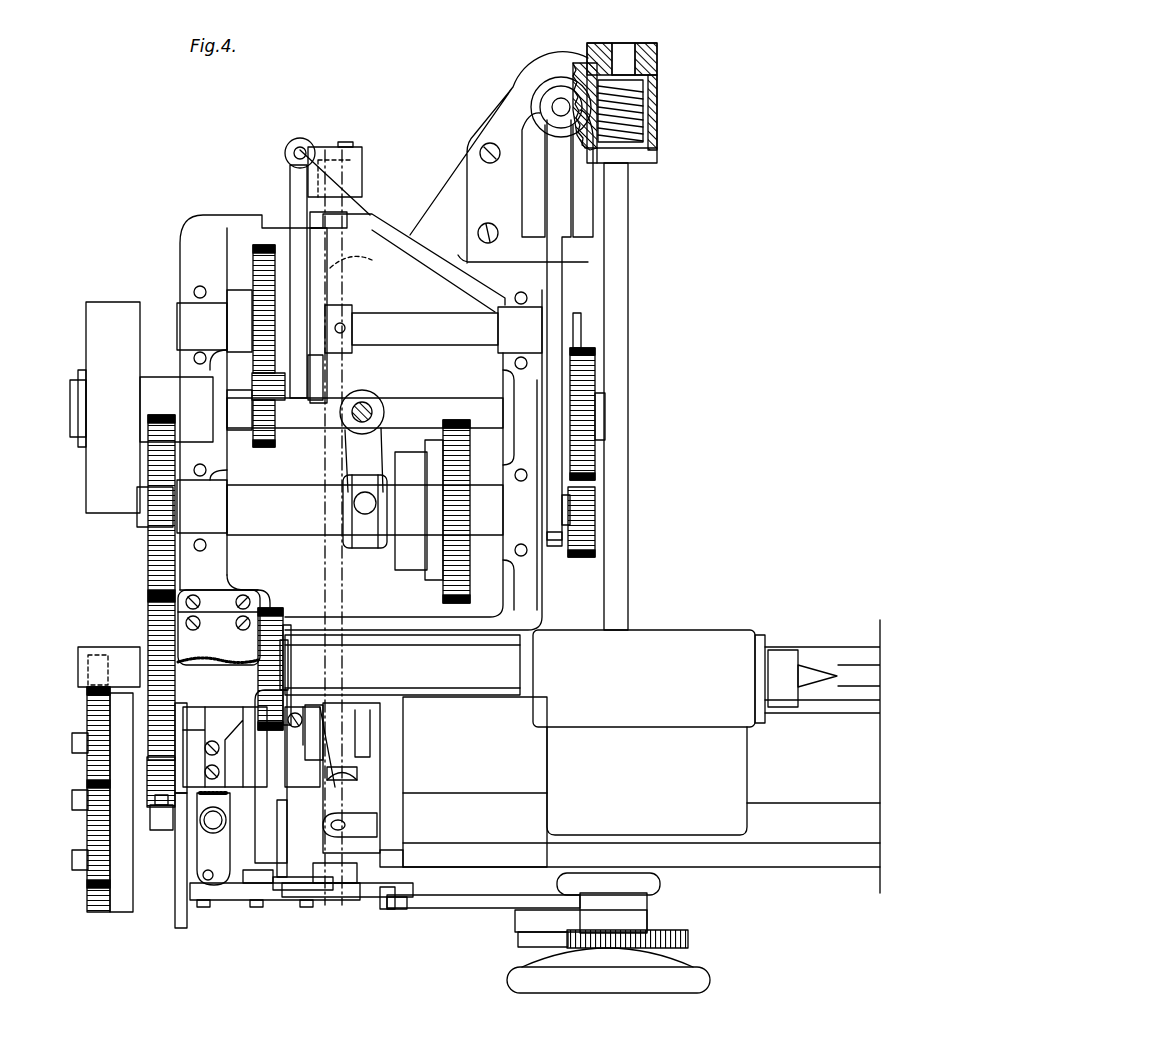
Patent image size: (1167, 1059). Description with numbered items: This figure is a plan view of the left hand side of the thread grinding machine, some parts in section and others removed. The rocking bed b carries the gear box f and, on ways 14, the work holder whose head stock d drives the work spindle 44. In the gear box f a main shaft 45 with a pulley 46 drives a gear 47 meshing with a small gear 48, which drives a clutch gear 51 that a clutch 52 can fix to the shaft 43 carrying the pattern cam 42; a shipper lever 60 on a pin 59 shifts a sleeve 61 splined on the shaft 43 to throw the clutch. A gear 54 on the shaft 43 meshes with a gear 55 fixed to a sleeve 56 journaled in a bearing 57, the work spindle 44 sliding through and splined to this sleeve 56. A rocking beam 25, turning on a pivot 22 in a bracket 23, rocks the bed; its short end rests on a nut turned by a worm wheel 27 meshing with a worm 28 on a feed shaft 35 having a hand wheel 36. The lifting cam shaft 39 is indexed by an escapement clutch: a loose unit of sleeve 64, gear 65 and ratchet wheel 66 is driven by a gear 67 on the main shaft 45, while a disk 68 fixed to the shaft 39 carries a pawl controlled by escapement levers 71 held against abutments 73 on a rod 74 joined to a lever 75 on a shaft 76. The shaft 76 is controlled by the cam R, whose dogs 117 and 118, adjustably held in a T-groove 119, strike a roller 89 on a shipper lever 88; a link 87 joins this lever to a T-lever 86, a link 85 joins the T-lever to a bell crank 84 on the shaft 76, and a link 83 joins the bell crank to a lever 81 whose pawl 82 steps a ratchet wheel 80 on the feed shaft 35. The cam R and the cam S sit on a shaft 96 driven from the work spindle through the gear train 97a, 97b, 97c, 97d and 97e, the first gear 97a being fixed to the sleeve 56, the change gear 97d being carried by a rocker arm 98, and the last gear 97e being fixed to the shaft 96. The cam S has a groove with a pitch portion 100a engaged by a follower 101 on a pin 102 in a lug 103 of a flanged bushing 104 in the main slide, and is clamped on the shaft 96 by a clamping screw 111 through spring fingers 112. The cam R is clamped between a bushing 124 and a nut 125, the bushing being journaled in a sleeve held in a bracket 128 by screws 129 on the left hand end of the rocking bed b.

The gear box f is at (170, 261).
The ways 14 is at (475, 782).
The pivot 22 is at (512, 185).
The bracket 23 is at (582, 215).
The rocking beam 25 is at (565, 297).
The worm wheel 27 is at (570, 62).
The worm 28 is at (658, 110).
The shaft 35 is at (628, 372).
The hand wheel 36 is at (540, 975).
The shaft 39 is at (398, 318).
The pattern cam 42 is at (554, 548).
The shaft 43 is at (294, 522).
The work spindle 44 is at (486, 688).
The main shaft 45 is at (415, 405).
The pulley 46 is at (92, 468).
The gear 47 is at (590, 420).
The small gear 48 is at (595, 549).
The clutch gear 51 is at (470, 588).
The clutch 52 is at (410, 562).
The gear 54 is at (148, 557).
The gear 55 is at (148, 603).
The sleeve 56 is at (223, 714).
The bearing 57 is at (219, 627).
The pin 59 is at (366, 398).
The shipper lever 60 is at (350, 447).
The sleeve 61 is at (370, 552).
The sleeve 64 is at (240, 345).
The gear 65 is at (262, 245).
The ratchet wheel 66 is at (303, 372).
The gear 67 is at (262, 450).
The disk 68 is at (318, 272).
The escapement levers 71 is at (293, 178).
The abutments 73 is at (285, 153).
The rod 74 is at (300, 138).
The lever 75 is at (330, 145).
The shaft 76 is at (372, 260).
The ratchet wheel 80 is at (688, 940).
The lever 81 is at (525, 918).
The pawl 82 is at (530, 935).
The link 83 is at (440, 900).
The bell crank 84 is at (357, 865).
The link 85 is at (245, 883).
The T-lever 86 is at (292, 880).
The link 87 is at (252, 872).
The shipper lever 88 is at (205, 862).
The roller 89 is at (200, 865).
The shaft 96 is at (375, 748).
The gear 97a is at (280, 612).
The gear 97b is at (280, 808).
The gear 97c is at (95, 730).
The change gear 97d is at (90, 888).
The gear 97e is at (90, 700).
The rocker arm 98 is at (120, 905).
The pitch portion 100a is at (340, 742).
The roller or follower 101 is at (357, 775).
The pin 102 is at (345, 828).
The lug 103 is at (305, 790).
The flanged bushing 104 is at (393, 810).
The clamping screw 111 is at (295, 700).
The spring fingers 112 is at (333, 705).
The dog 117 is at (182, 795).
The dog 118 is at (229, 733).
The T-groove 119 is at (180, 727).
The bushing 124 is at (183, 773).
The nut 125 is at (254, 660).
The bracket 128 is at (166, 826).
The bolts or screws 129 is at (160, 812).
The cam R is at (207, 704).
The cam S is at (282, 800).
The rocking bed b is at (380, 855).
The head stock d is at (641, 756).